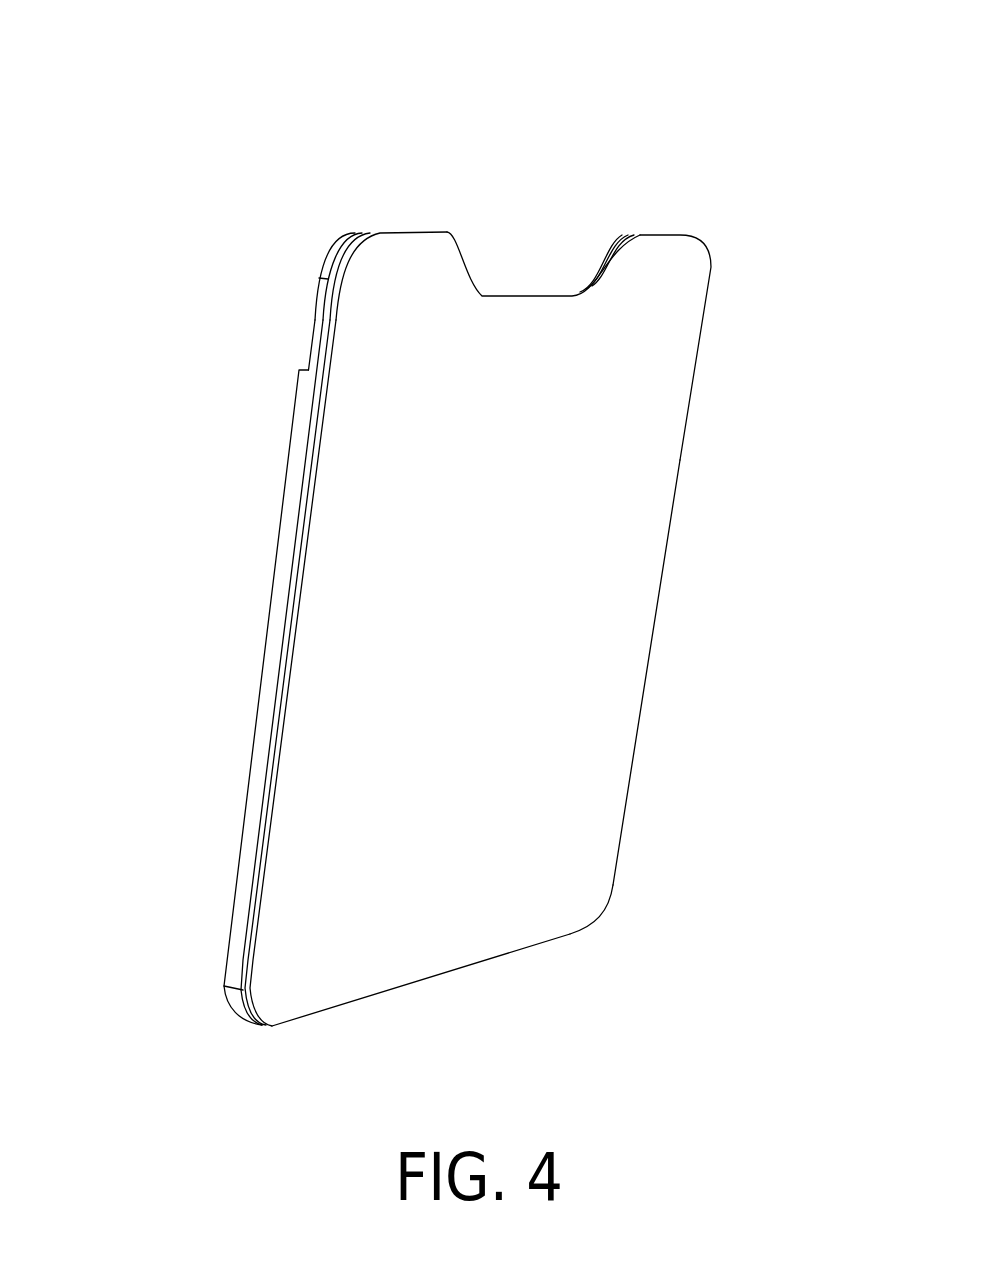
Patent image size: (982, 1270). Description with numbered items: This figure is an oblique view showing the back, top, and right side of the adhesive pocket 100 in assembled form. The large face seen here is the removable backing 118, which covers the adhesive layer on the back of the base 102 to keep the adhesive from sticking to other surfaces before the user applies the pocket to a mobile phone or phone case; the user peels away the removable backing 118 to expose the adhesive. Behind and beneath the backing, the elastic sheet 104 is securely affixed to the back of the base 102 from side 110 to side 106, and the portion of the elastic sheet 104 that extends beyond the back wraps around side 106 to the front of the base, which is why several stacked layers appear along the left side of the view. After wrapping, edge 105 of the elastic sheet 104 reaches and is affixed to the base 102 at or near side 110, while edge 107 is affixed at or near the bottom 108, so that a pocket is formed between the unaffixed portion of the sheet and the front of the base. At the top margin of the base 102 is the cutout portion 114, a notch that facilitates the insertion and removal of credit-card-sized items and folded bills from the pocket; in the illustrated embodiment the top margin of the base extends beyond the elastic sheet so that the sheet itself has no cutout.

The adhesive pocket 100 is at (117, 42).
The base 102 is at (350, 233).
The elastic sheet 104 is at (272, 690).
The edge 105 is at (678, 482).
The side 106 is at (315, 347).
The edge 107 is at (560, 935).
The bottom 108 is at (392, 992).
The side 110 is at (700, 345).
The cutout portion 114 is at (527, 296).
The removable backing 118 is at (518, 757).